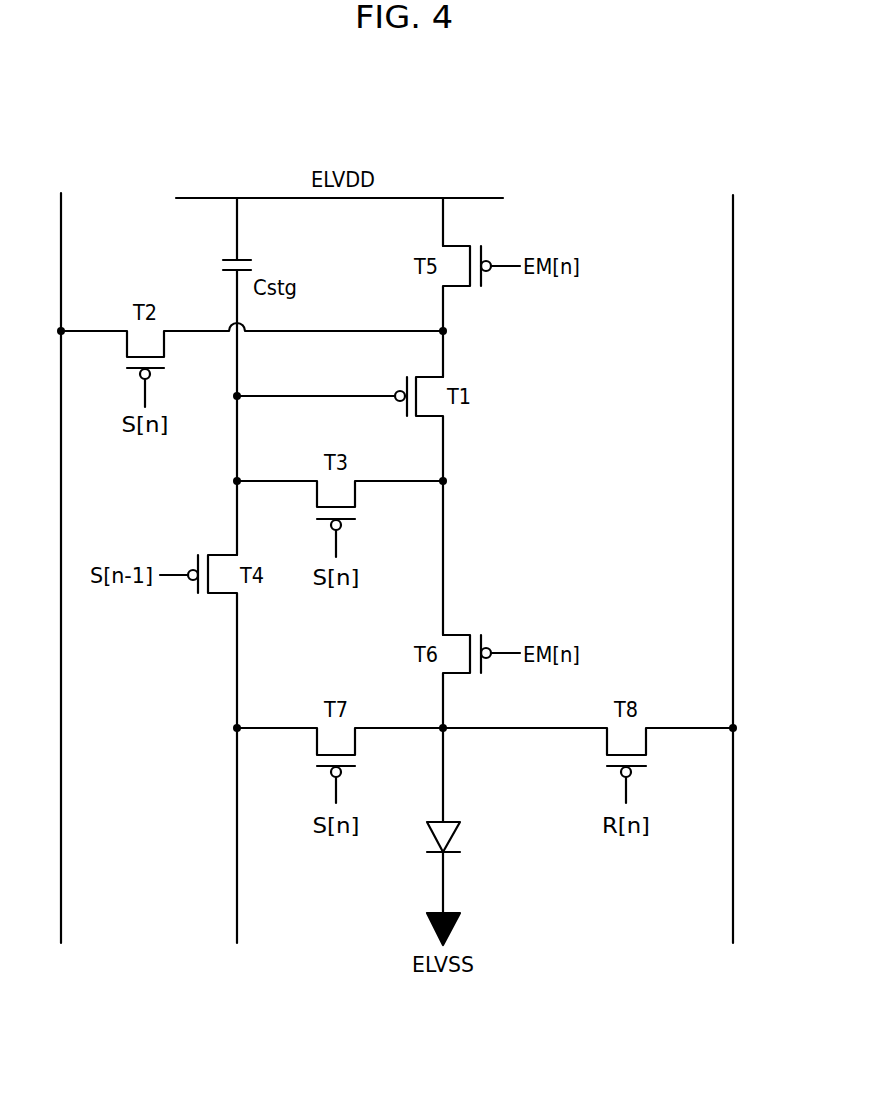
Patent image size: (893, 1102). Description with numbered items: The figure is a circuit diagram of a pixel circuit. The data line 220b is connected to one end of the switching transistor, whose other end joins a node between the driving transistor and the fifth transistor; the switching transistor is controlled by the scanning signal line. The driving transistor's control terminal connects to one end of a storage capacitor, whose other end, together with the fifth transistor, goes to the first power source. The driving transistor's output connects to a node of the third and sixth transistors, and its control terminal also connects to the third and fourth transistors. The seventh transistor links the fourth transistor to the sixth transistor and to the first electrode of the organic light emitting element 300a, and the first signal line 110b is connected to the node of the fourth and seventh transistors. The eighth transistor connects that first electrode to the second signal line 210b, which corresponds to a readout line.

The data line 220b is at (61, 193).
The second signal line 210b is at (733, 195).
The first signal line 110b is at (237, 943).
The organic light emitting element 300a is at (458, 829).